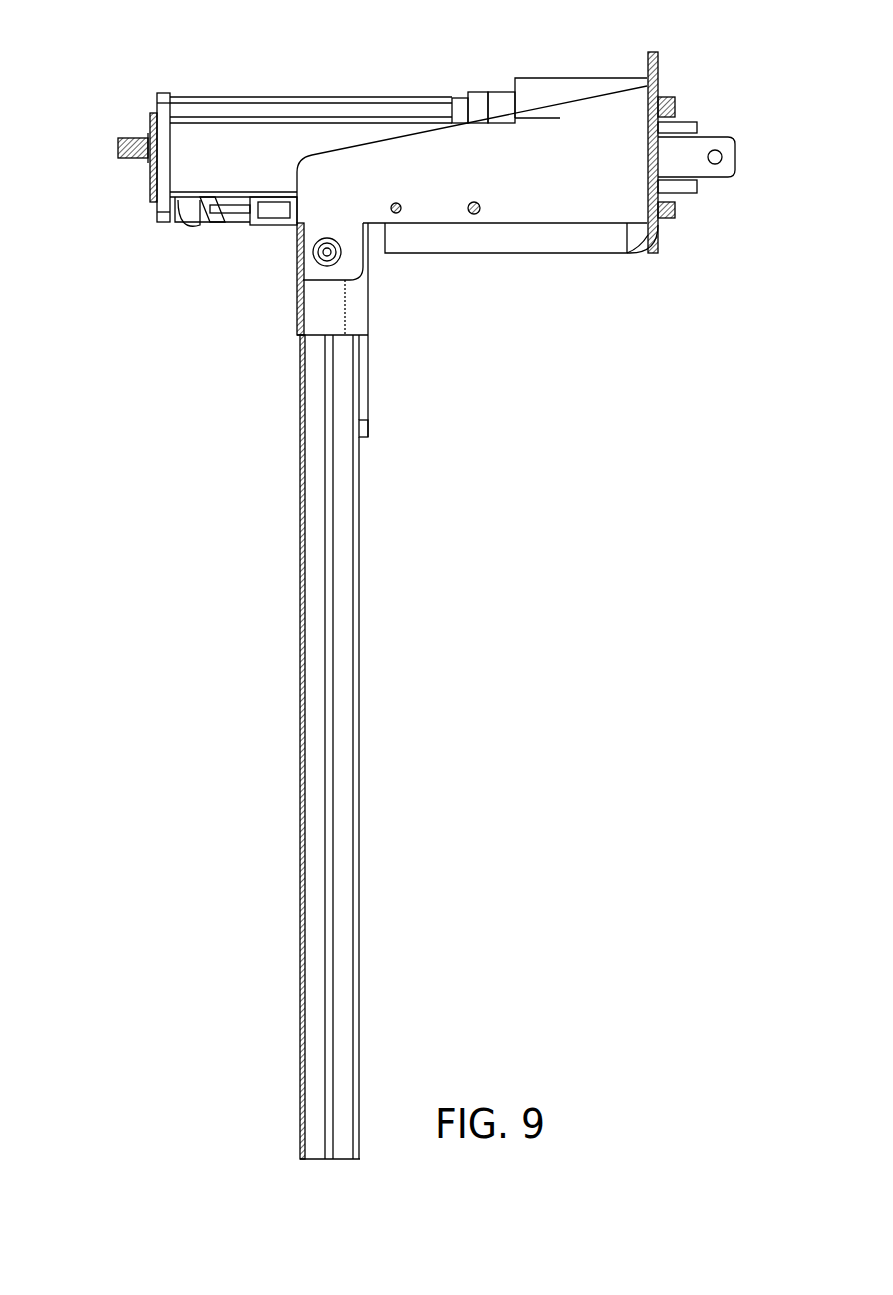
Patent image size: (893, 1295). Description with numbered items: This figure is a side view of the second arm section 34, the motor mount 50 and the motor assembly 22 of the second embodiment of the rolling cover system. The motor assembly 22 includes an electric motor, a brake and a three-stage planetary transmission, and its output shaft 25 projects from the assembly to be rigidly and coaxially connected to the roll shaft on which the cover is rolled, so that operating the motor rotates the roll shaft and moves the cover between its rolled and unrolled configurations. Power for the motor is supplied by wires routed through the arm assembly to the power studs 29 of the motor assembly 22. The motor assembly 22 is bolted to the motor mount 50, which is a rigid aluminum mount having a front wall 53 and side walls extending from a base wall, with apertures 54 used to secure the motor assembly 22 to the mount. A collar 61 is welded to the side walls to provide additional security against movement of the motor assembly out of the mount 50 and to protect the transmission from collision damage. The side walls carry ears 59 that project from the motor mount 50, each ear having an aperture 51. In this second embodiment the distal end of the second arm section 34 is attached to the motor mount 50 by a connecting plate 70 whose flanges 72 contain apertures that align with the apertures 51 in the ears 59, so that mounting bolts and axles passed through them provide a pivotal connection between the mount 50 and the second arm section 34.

The motor assembly 22 is at (243, 145).
The power studs 29 is at (118, 148).
The collar 61 is at (547, 90).
The motor mount 50 is at (568, 180).
The front wall 53 is at (657, 60).
The output shaft 25 is at (712, 165).
The apertures 54 is at (402, 208).
The ears 59 is at (330, 210).
The aperture 51 is at (313, 252).
The flanges 72 is at (345, 313).
The connecting plate 70 is at (368, 400).
The second arm section 34 is at (342, 677).